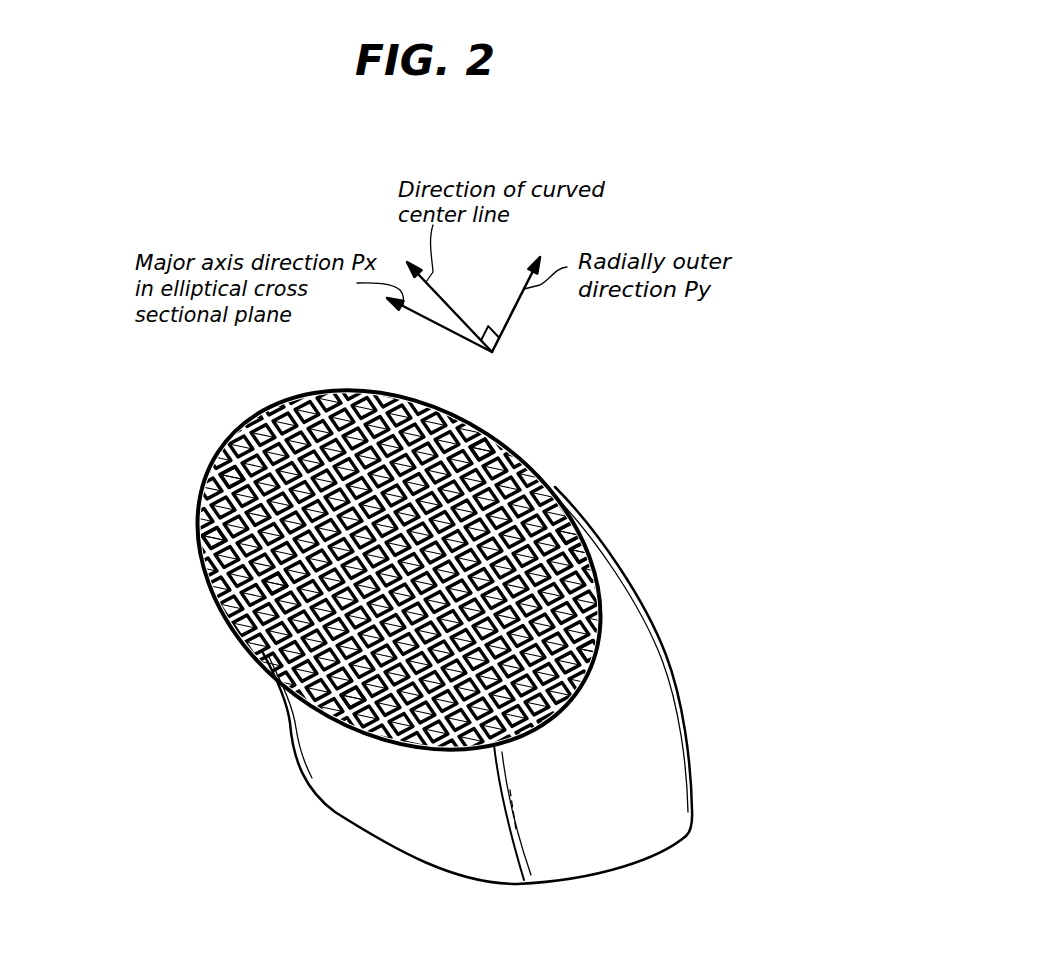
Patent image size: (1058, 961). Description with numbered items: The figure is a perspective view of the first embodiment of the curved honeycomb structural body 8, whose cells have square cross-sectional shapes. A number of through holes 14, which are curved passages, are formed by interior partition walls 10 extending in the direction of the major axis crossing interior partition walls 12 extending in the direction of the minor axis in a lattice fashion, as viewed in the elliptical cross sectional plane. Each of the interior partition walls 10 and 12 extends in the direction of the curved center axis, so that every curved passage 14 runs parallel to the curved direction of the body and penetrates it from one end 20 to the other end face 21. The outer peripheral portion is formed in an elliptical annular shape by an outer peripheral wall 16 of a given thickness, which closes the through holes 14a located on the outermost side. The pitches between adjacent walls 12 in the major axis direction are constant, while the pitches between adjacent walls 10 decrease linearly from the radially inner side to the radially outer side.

The curved honeycomb structural body 8 is at (549, 456).
The interior partition walls 10 is at (390, 407).
The interior partition walls 12 is at (220, 477).
The through holes 14 is at (275, 581).
The through holes positioned on an outermost side 14a is at (238, 450).
The outer peripheral wall 16 is at (550, 697).
The one end 20 is at (570, 523).
The other end face 21 is at (392, 832).